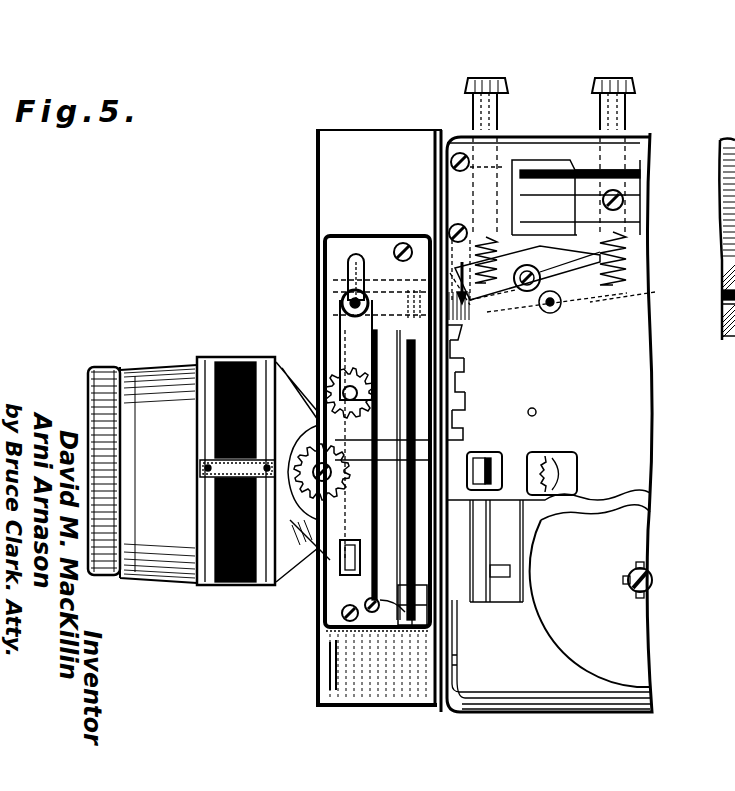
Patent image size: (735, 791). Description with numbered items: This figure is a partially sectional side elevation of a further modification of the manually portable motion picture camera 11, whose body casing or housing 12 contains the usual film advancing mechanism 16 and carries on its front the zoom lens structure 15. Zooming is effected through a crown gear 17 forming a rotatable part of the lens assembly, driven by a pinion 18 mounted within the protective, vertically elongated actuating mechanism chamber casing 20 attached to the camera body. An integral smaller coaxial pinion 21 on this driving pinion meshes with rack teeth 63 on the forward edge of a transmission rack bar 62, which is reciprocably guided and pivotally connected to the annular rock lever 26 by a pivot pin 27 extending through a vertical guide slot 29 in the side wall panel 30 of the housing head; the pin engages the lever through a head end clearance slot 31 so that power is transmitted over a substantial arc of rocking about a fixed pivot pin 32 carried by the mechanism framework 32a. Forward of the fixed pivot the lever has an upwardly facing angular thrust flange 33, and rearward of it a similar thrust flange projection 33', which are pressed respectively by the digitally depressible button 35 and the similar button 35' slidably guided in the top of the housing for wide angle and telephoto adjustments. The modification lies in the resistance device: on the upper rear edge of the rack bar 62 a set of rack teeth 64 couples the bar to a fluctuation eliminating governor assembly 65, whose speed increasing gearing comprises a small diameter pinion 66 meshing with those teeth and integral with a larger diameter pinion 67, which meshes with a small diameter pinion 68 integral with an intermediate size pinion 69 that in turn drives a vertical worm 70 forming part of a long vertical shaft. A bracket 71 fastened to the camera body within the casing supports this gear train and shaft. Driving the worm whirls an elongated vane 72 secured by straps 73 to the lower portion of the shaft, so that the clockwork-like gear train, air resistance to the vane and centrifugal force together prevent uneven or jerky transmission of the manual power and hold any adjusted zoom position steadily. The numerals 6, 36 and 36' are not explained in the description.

The screw / shaft 6 is at (300, 296).
The motion picture camera 11 is at (310, 183).
The body casing or housing 12 is at (444, 702).
The zoom lens structure 15 is at (196, 330).
The film advancing mechanism 16 is at (490, 448).
The crown gear 17 is at (300, 400).
The pinion 18 is at (268, 440).
The actuating mechanism chamber casing 20 is at (318, 619).
The pinion 21 is at (300, 548).
The rock lever 26 is at (552, 313).
The pivot pin 27 is at (380, 281).
The vertical guide slot 29 is at (364, 262).
The side wall panel 30 is at (398, 137).
The head end clearance slot 31 is at (340, 303).
The fixed pivot pin 32 is at (596, 262).
The mechanism framework 32a is at (622, 414).
The angular thrust flange 33 is at (494, 302).
The angular thrust flange projection 33' is at (642, 287).
The digitally depressible button 35 is at (461, 172).
The digitally depressible button 35' is at (637, 162).
The pivot 36 is at (557, 271).
The pivot 36' is at (687, 240).
The transmission rack bar 62 is at (326, 326).
The rack teeth 63 is at (316, 512).
The rack teeth 64 is at (465, 330).
The fluctuation eliminating governor assembly 65 is at (470, 405).
The small diameter pinion 66 is at (466, 356).
The larger diameter pinion 67 is at (466, 372).
The small diameter pinion 68 is at (466, 410).
The intermediate size pinion 69 is at (466, 432).
The vertical worm 70 is at (450, 403).
The bracket 71 is at (370, 626).
The vane 72 is at (395, 573).
The straps 73 is at (415, 626).